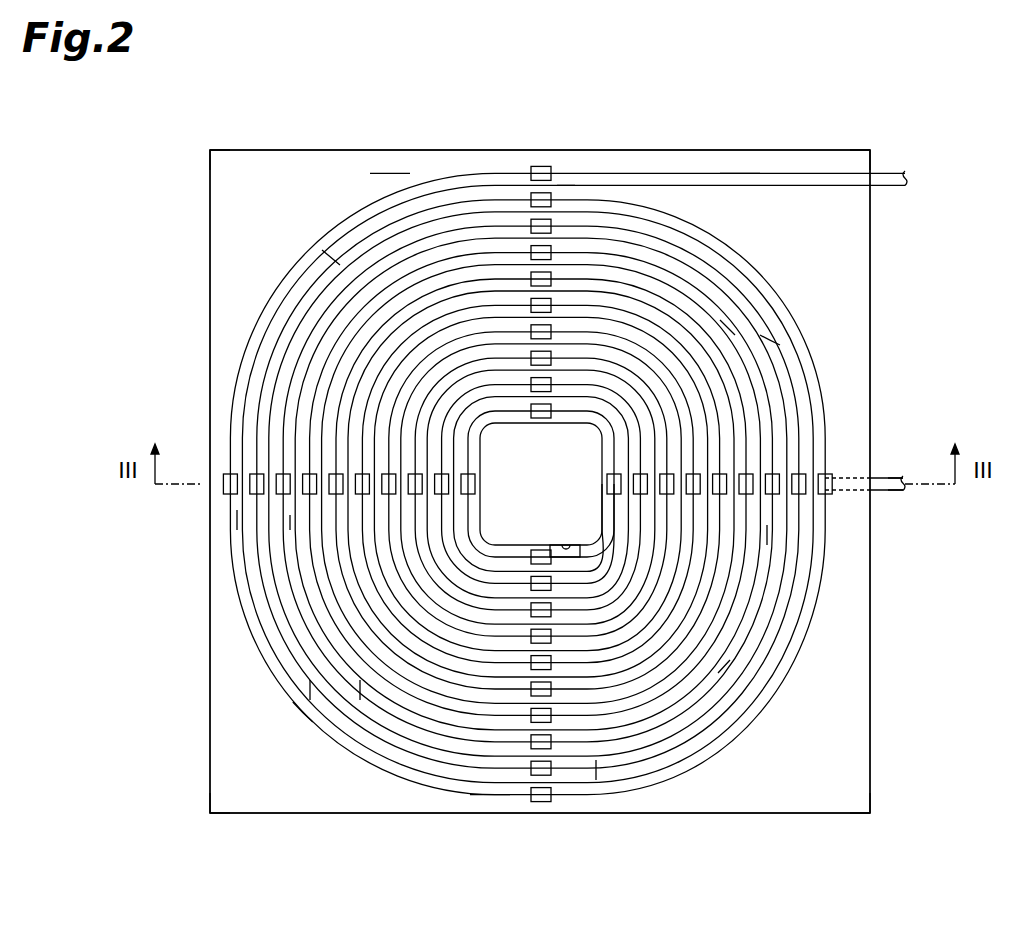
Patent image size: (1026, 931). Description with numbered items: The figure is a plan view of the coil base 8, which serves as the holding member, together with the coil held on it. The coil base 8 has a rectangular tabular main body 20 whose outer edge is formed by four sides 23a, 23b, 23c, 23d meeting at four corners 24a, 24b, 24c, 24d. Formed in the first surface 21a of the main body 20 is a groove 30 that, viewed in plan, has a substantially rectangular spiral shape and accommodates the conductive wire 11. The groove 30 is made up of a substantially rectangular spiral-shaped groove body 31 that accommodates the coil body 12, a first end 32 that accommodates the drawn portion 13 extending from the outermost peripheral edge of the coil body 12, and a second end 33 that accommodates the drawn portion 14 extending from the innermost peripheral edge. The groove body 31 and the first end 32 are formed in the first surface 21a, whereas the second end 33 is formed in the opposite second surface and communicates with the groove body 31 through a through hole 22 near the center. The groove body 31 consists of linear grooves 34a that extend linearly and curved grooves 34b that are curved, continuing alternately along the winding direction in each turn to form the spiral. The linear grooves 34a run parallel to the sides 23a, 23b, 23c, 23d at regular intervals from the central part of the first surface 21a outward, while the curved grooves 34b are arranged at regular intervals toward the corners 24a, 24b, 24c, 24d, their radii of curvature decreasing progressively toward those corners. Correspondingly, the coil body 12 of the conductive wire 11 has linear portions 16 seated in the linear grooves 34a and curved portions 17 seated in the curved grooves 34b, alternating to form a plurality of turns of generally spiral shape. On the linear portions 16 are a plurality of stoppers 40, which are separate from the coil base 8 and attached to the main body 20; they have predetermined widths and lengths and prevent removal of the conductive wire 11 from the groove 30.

The coil base 8 is at (658, 130).
The conductive wire 11 is at (490, 800).
The coil body 12 is at (293, 703).
The drawn portion 13 is at (738, 172).
The drawn portion 14 is at (888, 492).
The linear portions 16 is at (605, 235).
The curved portions 17 is at (720, 320).
The main body 20 is at (313, 150).
The first surface 21a is at (392, 170).
The through hole 22 is at (569, 545).
The side 23a is at (480, 158).
The side 23b is at (378, 813).
The side 23c is at (870, 665).
The side 23d is at (210, 658).
The corner 24a is at (210, 150).
The corner 24b is at (870, 813).
The corner 24c is at (870, 150).
The corner 24d is at (210, 813).
The groove 30 is at (544, 478).
The groove body 31 is at (770, 335).
The first end 32 is at (800, 173).
The second end 33 is at (863, 472).
The linear grooves 34a is at (290, 522).
The curved grooves 34b is at (365, 283).
The stoppers 40 is at (551, 193).